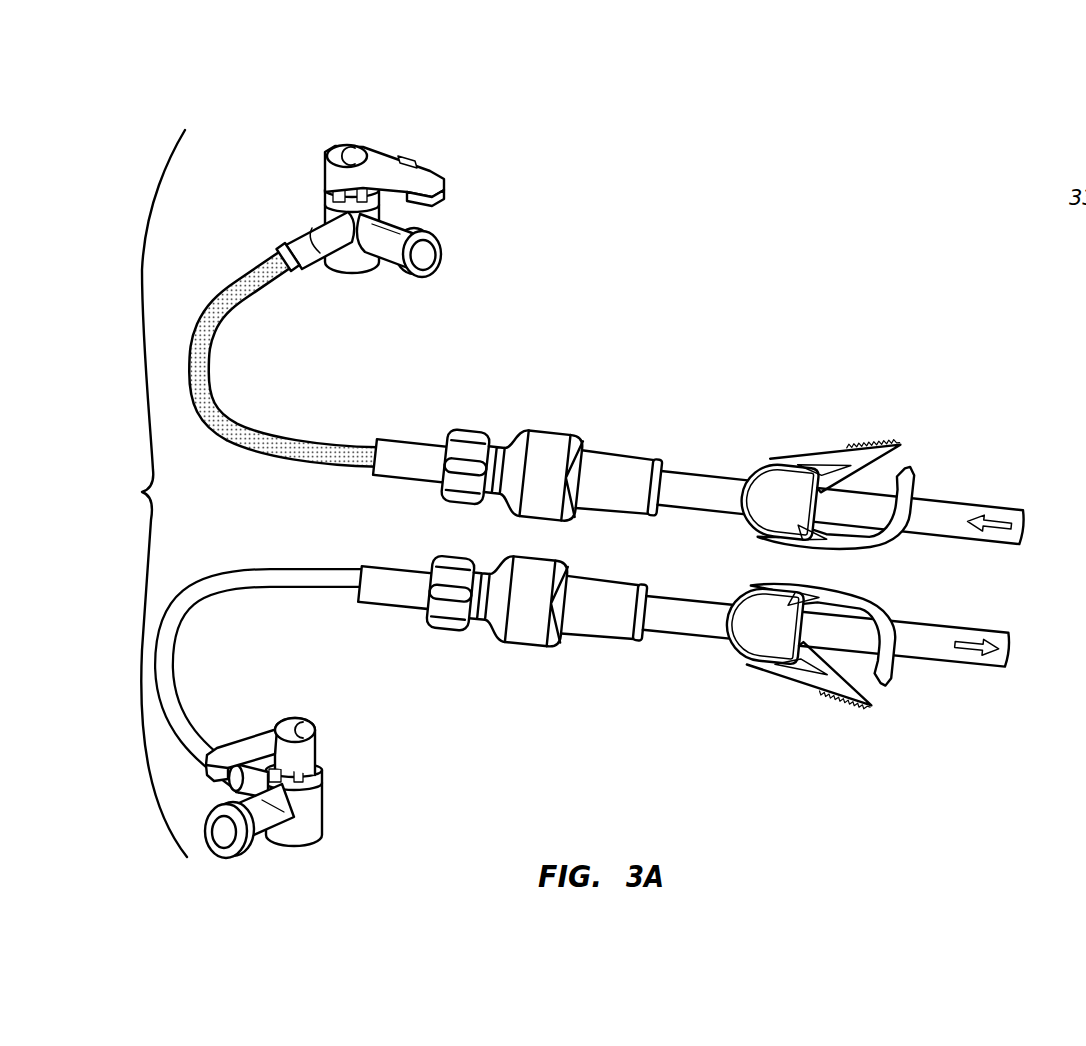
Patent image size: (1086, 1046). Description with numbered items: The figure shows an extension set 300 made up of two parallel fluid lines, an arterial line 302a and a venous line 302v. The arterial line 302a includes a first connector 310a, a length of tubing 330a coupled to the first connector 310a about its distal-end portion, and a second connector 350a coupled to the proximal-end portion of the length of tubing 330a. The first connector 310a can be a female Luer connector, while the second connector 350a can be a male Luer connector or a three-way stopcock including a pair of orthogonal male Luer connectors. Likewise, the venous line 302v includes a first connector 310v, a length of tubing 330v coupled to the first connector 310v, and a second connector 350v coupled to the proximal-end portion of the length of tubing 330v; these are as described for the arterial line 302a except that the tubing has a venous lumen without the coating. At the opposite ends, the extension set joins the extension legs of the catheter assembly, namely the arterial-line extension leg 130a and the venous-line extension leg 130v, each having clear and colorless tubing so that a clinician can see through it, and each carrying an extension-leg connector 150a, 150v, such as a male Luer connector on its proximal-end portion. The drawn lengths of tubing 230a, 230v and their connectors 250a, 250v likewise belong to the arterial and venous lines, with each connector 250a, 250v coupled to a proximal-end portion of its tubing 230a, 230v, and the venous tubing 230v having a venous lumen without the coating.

The extension set 300 is at (143, 491).
The arterial line 302a is at (197, 421).
The venous line 302v is at (185, 575).
The length of tubing 330a is at (222, 402).
The length of tubing 330v is at (190, 707).
The second connector 350a is at (348, 258).
The second connector 350v is at (307, 805).
The first connector 310a is at (410, 440).
The first connector 310v is at (380, 603).
The extension-leg connector 150a is at (581, 429).
The connector 250a is at (542, 450).
The extension-leg connector 150v is at (566, 662).
The connector 250v is at (535, 628).
The arterial-line extension leg 130a is at (857, 492).
The length of tubing 230a is at (958, 513).
The venous-line extension leg 130v is at (843, 662).
The length of tubing 230v is at (950, 650).